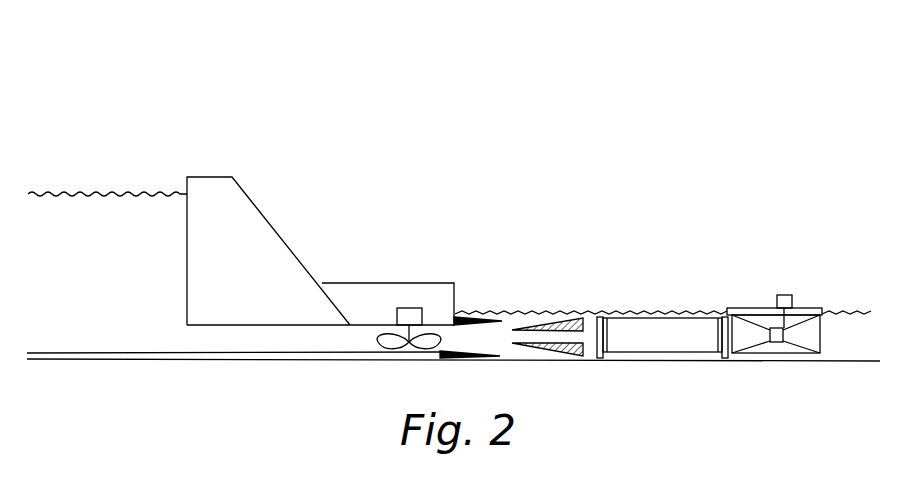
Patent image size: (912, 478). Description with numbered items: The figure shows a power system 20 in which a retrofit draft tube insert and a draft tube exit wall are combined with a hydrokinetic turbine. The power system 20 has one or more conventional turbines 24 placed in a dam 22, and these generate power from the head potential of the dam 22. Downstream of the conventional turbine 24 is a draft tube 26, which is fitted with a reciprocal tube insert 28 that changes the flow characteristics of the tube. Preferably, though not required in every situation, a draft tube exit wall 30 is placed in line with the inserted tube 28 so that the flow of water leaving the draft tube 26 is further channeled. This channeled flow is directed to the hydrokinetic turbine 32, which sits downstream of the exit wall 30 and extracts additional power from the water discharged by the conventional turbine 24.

The power system 20 is at (505, 120).
The dam 22 is at (280, 233).
The conventional turbine 24 is at (402, 352).
The draft tube 26 is at (477, 310).
The reciprocal tube insert 28 is at (552, 312).
The draft tube exit wall 30 is at (647, 312).
The hydrokinetic turbine 32 is at (764, 305).